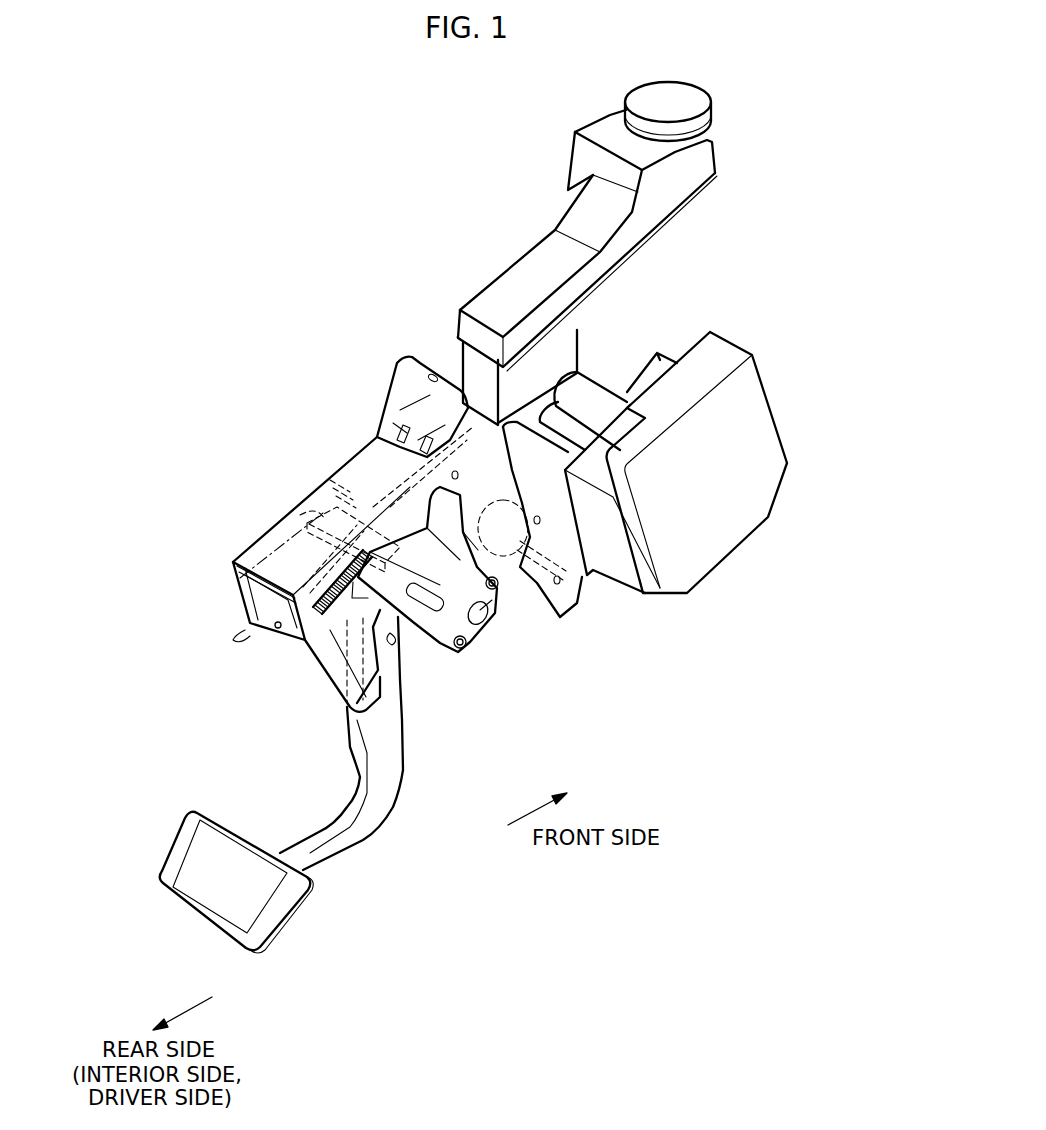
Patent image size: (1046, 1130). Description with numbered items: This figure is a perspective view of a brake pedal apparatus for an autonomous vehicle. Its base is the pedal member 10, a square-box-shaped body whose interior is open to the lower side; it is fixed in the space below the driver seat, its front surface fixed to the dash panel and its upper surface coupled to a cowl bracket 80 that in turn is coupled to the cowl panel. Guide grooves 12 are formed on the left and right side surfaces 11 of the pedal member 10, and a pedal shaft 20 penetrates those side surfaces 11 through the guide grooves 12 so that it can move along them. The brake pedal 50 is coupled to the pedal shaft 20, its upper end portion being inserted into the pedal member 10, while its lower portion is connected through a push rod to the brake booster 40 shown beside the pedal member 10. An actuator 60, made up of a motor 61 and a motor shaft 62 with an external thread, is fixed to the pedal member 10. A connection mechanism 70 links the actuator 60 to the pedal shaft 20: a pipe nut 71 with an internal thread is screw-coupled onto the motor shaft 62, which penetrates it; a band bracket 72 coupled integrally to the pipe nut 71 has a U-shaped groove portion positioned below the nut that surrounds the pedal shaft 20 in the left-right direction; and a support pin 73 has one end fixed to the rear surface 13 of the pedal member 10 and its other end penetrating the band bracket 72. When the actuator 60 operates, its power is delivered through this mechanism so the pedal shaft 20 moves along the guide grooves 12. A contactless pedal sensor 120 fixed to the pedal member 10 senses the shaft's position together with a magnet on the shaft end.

The pedal member 10 is at (222, 562).
The left and right side surfaces 11 is at (340, 673).
The guide grooves 12 is at (373, 683).
The rear surface 13 is at (262, 607).
The pedal shaft 20 is at (300, 518).
The brake booster 40 is at (762, 432).
The brake pedal 50 is at (370, 830).
The actuator 60 is at (368, 480).
The motor 61 is at (360, 437).
The motor shaft 62 is at (317, 653).
The connection mechanism 70 is at (298, 573).
The pipe nut 71 is at (480, 610).
The band bracket 72 is at (333, 477).
The support pin 73 is at (275, 628).
The cowl bracket 80 is at (388, 357).
The contactless pedal sensor 120 is at (477, 633).